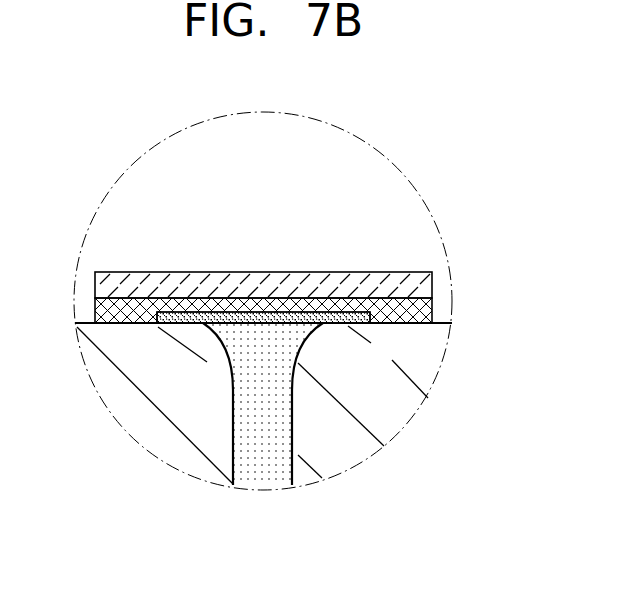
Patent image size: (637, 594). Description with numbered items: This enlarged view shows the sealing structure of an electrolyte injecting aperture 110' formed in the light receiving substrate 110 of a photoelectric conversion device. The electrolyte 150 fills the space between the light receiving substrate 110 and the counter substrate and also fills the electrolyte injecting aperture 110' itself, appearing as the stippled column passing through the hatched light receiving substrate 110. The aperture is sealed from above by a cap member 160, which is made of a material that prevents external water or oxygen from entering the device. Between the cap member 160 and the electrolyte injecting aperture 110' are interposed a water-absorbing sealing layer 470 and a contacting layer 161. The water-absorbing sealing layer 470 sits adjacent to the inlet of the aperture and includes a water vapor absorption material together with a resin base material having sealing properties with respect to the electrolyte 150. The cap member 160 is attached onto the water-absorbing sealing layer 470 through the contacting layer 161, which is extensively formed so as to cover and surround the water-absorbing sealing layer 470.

The light receiving substrate 110 is at (281, 405).
The electrolyte injecting aperture 110' is at (317, 419).
The electrolyte 150 is at (266, 460).
The cap member 160 is at (432, 283).
The contacting layer 161 is at (432, 312).
The water-absorbing sealing layer 470 is at (262, 317).